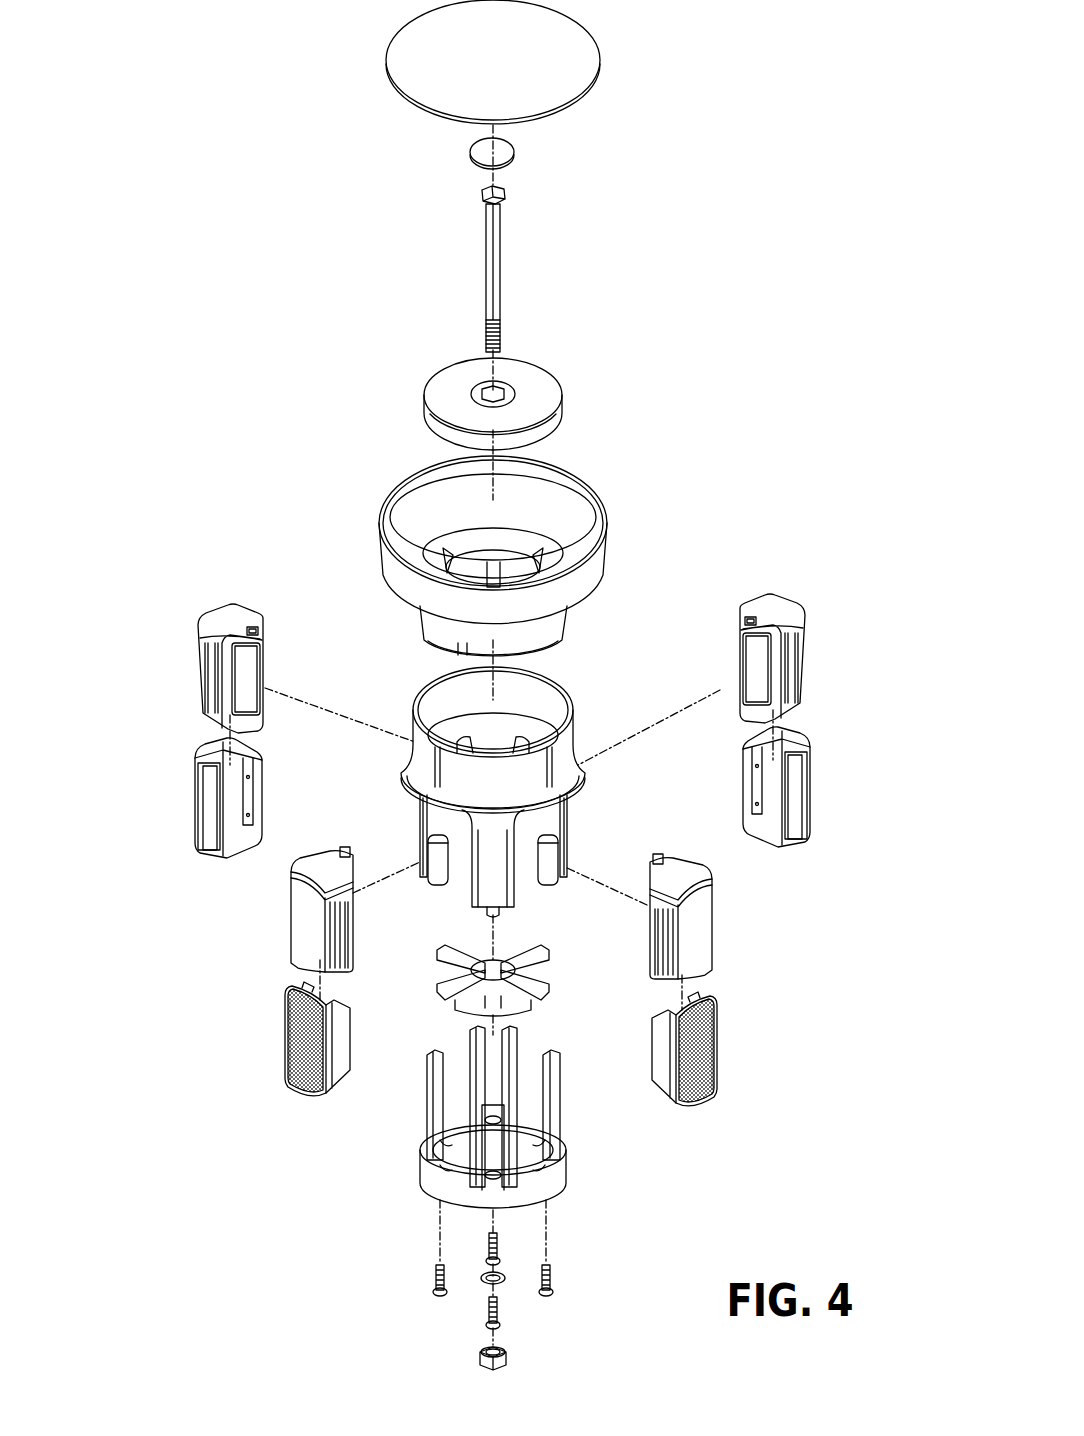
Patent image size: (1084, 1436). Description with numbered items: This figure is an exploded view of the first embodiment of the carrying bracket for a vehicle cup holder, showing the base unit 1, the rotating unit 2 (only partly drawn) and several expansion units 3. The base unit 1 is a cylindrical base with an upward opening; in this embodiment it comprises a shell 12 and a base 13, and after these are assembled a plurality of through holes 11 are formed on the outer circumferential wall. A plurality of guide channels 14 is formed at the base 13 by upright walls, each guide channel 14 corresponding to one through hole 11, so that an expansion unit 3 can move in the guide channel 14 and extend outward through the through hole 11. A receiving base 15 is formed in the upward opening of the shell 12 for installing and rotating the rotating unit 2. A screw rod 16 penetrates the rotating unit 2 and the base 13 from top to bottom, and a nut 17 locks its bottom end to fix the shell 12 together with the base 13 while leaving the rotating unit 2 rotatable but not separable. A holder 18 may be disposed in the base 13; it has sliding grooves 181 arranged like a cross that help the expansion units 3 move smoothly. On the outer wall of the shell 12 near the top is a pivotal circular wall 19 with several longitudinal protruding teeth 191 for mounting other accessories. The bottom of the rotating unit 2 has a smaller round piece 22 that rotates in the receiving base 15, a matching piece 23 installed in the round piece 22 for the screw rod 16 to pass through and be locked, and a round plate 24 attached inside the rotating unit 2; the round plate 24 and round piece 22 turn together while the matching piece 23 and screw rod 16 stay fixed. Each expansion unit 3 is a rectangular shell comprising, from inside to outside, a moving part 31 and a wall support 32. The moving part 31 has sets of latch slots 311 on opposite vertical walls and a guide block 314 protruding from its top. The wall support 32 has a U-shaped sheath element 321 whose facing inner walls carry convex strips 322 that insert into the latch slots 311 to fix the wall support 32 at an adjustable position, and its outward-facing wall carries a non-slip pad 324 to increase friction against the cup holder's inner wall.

The base unit 1 is at (542, 923).
The rotating unit 2 is at (477, 556).
The expansion unit 3 is at (502, 864).
The through hole 11 is at (435, 817).
The shell 12 is at (500, 893).
The base 13 is at (555, 1182).
The guide channel 14 is at (457, 1067).
The receiving base 15 is at (547, 700).
The screw rod 16 is at (498, 262).
The nut 17 is at (478, 1356).
The holder 18 is at (491, 971).
The pivotal circular wall 19 is at (491, 724).
The round piece 22 is at (445, 622).
The matching piece 23 is at (543, 383).
The round plate 24 is at (583, 70).
The moving part 31 is at (501, 766).
The wall support 32 is at (502, 876).
The sliding groove 181 is at (452, 947).
The longitudinal protruding tooth 191 is at (433, 762).
The latch slot 311 is at (205, 667).
The guide block 314 is at (246, 625).
The sheath element 321 is at (207, 808).
The convex strip 322 is at (247, 800).
The non-slip pad 324 is at (290, 1040).